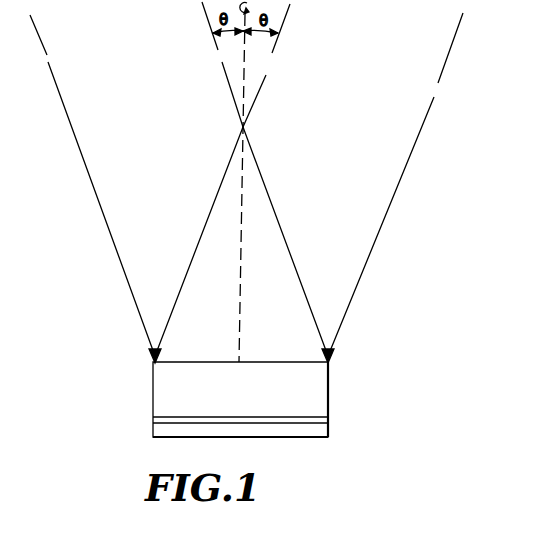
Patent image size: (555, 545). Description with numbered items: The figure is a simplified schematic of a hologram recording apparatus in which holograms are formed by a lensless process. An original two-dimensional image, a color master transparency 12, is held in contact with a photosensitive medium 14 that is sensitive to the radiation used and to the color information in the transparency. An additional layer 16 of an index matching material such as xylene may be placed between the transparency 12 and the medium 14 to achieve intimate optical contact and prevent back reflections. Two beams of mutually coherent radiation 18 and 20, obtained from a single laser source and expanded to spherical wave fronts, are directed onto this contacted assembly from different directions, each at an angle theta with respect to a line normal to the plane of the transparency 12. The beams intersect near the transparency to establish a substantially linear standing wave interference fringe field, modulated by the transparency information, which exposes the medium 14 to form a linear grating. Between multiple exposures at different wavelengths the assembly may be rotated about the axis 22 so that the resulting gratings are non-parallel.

The color master transparency 12 is at (160, 383).
The photosensitive medium 14 is at (155, 428).
The layer of index matching material 16 is at (155, 420).
The beam of mutually coherent radiation 18 is at (160, 122).
The beam of mutually coherent radiation 20 is at (345, 122).
The axis 22 is at (245, 63).